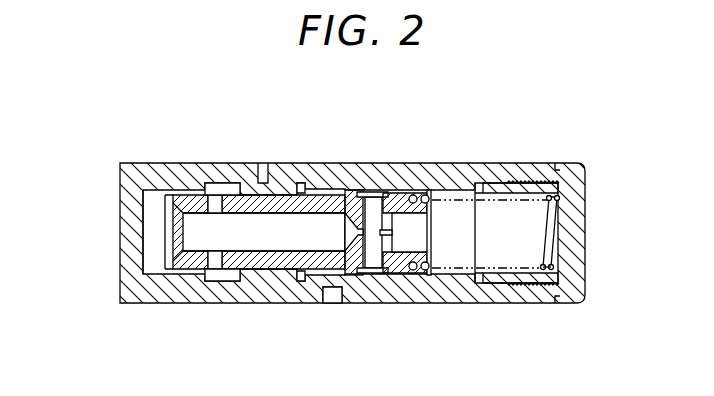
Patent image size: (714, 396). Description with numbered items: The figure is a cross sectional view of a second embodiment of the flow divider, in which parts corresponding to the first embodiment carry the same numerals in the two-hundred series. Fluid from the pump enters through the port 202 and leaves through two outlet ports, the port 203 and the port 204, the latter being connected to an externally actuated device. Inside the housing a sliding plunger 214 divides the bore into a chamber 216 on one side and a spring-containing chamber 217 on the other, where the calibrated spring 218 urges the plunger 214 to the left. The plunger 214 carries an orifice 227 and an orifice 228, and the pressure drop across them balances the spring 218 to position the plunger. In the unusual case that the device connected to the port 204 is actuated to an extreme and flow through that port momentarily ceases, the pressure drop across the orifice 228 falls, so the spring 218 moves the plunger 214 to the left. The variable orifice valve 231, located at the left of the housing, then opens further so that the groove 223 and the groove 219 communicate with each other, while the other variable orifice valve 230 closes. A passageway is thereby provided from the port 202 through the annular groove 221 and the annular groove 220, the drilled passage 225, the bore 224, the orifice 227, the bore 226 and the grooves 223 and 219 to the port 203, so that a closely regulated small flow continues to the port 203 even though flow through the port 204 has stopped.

The port 202 is at (266, 176).
The port 203 is at (333, 291).
The port 204 is at (497, 297).
The plunger 214 is at (400, 200).
The chamber 216 is at (153, 227).
The chamber 217 is at (530, 222).
The spring 218 is at (552, 263).
The groove 219 is at (324, 188).
The annular groove 220 is at (210, 183).
The annular groove 221 is at (267, 269).
The groove 223 is at (390, 278).
The bore 224 is at (272, 242).
The drilled passage 225 is at (216, 197).
The bore 226 is at (373, 241).
The orifice 227 is at (357, 233).
The orifice 228 is at (393, 234).
The variable orifice valve 230 is at (301, 183).
The variable orifice valve 231 is at (233, 281).